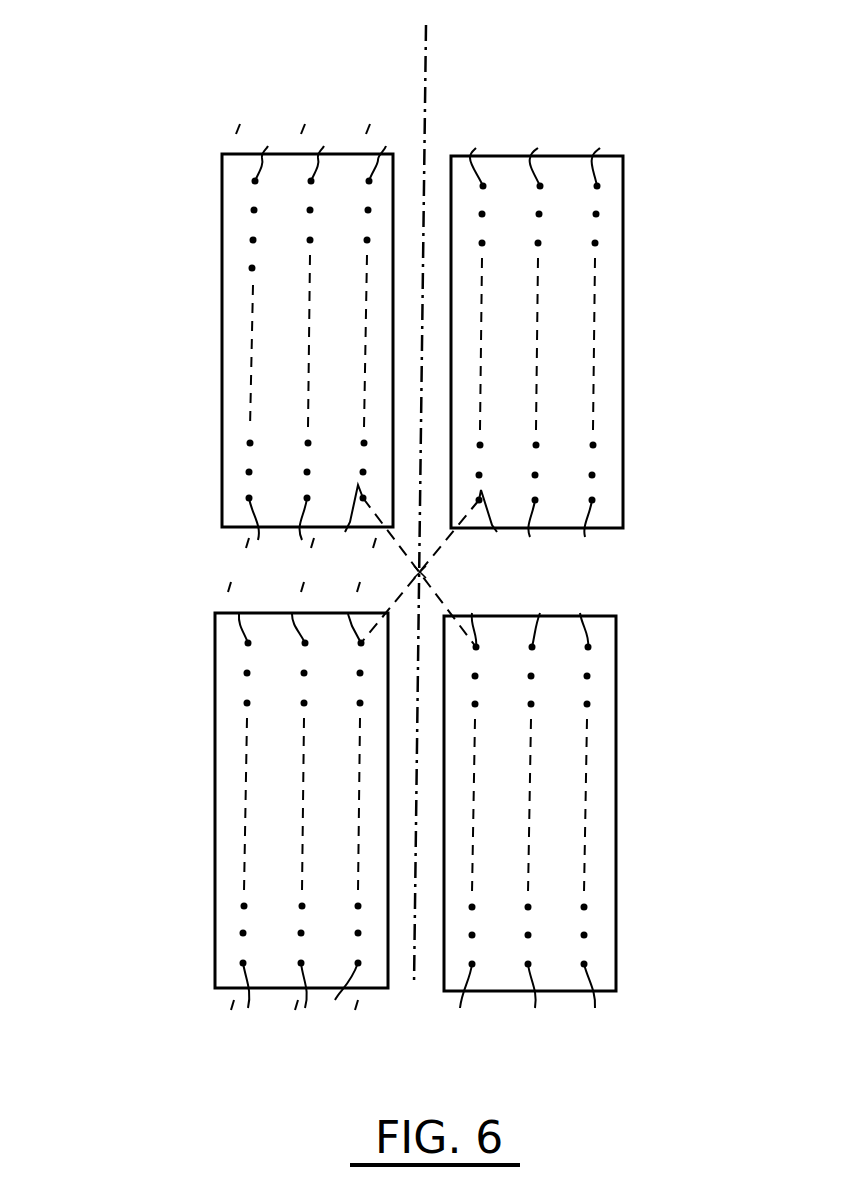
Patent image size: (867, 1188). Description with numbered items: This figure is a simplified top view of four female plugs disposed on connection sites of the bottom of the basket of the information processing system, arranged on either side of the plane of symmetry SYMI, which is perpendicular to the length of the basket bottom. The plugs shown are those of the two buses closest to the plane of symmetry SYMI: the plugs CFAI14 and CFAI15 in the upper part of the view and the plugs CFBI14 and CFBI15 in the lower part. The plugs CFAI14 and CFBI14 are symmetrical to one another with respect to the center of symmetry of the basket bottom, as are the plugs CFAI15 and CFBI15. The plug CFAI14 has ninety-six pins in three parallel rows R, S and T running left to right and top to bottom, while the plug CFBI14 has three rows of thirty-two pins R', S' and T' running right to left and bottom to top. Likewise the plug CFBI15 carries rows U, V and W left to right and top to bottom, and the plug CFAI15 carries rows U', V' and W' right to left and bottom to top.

The plane of symmetry SYMI is at (426, 62).
The female plug CFAI15 is at (222, 206).
The female plug CFAI14 is at (623, 212).
The female plug CFBI14 is at (216, 775).
The female plug CFBI15 is at (617, 797).